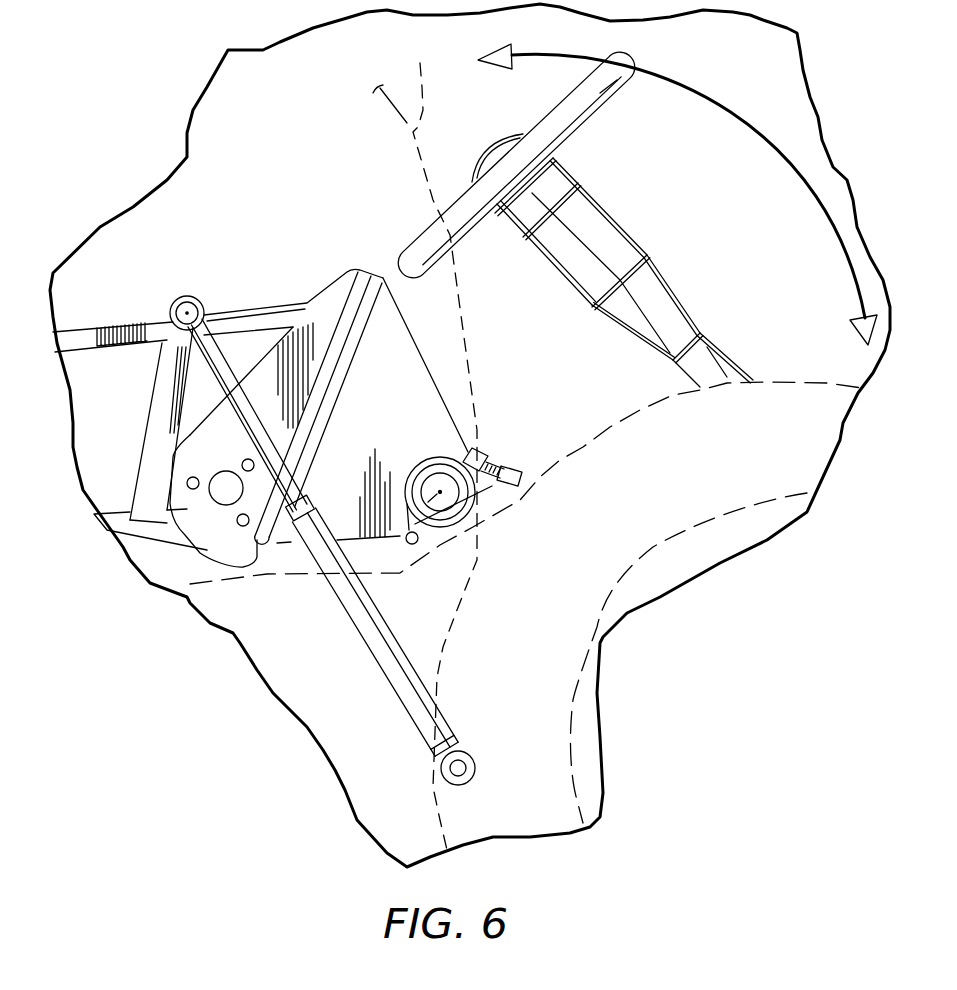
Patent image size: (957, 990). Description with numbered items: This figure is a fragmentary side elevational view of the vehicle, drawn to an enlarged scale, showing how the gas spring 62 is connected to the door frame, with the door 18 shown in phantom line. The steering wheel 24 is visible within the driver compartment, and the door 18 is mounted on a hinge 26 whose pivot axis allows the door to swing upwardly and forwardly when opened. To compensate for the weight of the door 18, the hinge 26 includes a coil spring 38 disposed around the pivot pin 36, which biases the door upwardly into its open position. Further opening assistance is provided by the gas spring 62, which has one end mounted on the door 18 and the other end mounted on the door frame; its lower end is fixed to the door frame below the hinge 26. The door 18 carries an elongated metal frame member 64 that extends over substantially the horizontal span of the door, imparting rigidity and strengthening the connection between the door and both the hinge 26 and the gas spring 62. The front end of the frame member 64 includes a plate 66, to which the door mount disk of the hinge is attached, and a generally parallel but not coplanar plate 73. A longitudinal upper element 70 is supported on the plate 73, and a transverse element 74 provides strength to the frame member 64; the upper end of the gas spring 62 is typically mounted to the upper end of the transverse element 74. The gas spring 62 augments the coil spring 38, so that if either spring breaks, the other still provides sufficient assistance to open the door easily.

The door 18 is at (425, 445).
The steering wheel 24 is at (566, 104).
The hinge 26 is at (472, 511).
The pivot pin 36 is at (420, 543).
The coil spring 38 is at (413, 473).
The gas spring 62 is at (353, 603).
The frame member 64 is at (237, 288).
The plate 66 is at (393, 382).
The upper element 70 is at (143, 327).
The plate 73 is at (320, 325).
The transverse element 74 is at (150, 467).